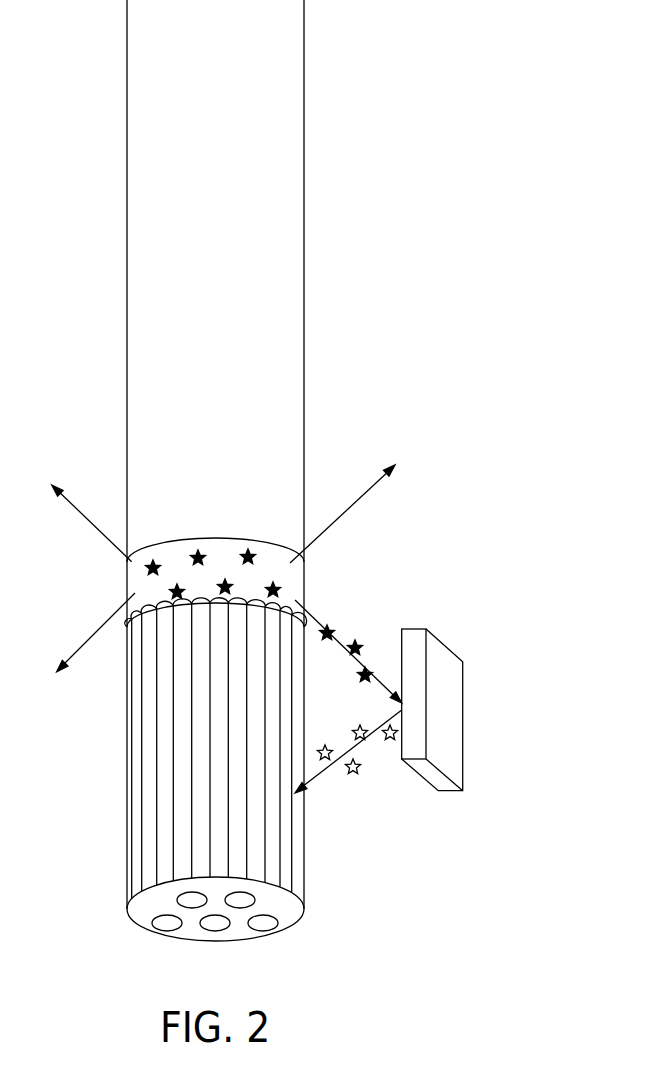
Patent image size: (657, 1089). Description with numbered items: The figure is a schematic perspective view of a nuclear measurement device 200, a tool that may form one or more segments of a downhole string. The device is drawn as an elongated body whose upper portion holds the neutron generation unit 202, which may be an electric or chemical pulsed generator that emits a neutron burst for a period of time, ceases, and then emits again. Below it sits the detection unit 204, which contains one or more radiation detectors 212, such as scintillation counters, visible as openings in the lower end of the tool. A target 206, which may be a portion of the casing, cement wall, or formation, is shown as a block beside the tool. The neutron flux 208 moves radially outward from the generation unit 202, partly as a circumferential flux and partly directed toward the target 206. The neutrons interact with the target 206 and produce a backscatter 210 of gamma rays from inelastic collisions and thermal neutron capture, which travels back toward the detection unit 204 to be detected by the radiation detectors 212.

The nuclear measurement device 200 is at (345, 185).
The neutron generation unit 202 is at (219, 556).
The detection unit 204 is at (176, 930).
The target 206 is at (445, 645).
The neutron flux 208 is at (350, 643).
The backscatter 210 is at (358, 772).
The radiation detectors 212 is at (262, 924).